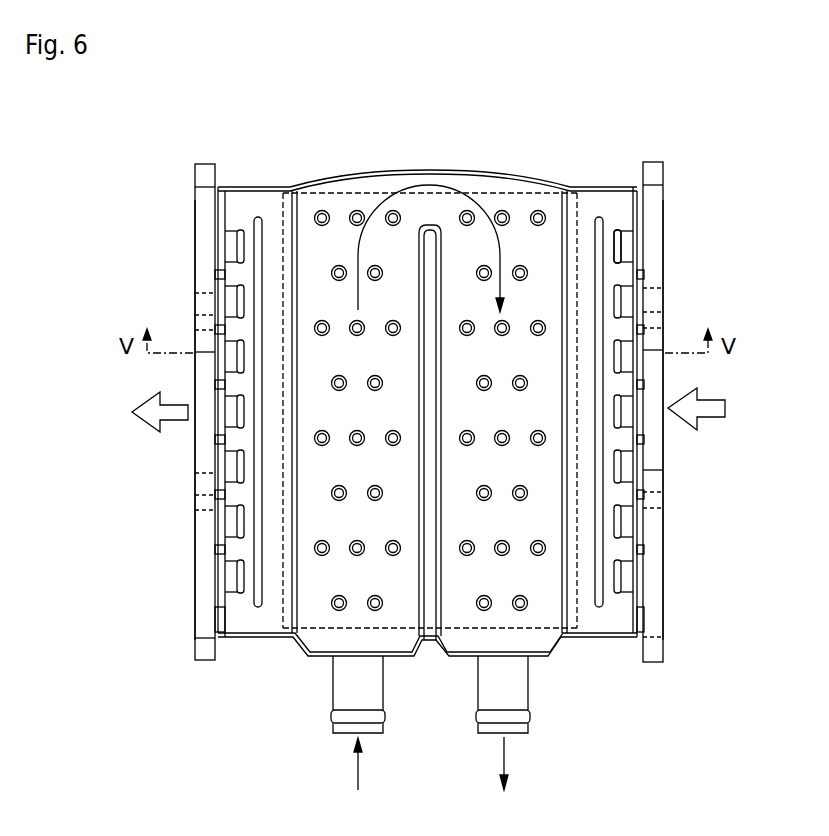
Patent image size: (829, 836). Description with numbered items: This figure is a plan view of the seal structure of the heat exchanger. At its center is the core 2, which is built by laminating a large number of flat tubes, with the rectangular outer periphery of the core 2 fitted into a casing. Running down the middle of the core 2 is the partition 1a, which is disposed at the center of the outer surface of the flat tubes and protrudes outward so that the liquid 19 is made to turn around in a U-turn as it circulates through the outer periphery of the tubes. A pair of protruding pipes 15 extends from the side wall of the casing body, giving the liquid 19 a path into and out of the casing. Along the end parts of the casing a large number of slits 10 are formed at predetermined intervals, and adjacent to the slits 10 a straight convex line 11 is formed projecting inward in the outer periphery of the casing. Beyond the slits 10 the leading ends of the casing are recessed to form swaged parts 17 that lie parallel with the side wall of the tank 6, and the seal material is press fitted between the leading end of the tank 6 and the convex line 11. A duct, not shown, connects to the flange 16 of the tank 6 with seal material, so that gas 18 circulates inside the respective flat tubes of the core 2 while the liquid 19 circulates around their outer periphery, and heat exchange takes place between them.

The core 2 is at (497, 193).
The partition 1a is at (432, 595).
The tank 6 is at (205, 164).
The slits 10 is at (612, 245).
The convex line 11 is at (597, 236).
The protruding pipes 15 is at (333, 682).
The flange 16 is at (195, 222).
The swaged parts 17 is at (626, 250).
The gas 18 is at (712, 420).
The liquid 19 is at (397, 193).